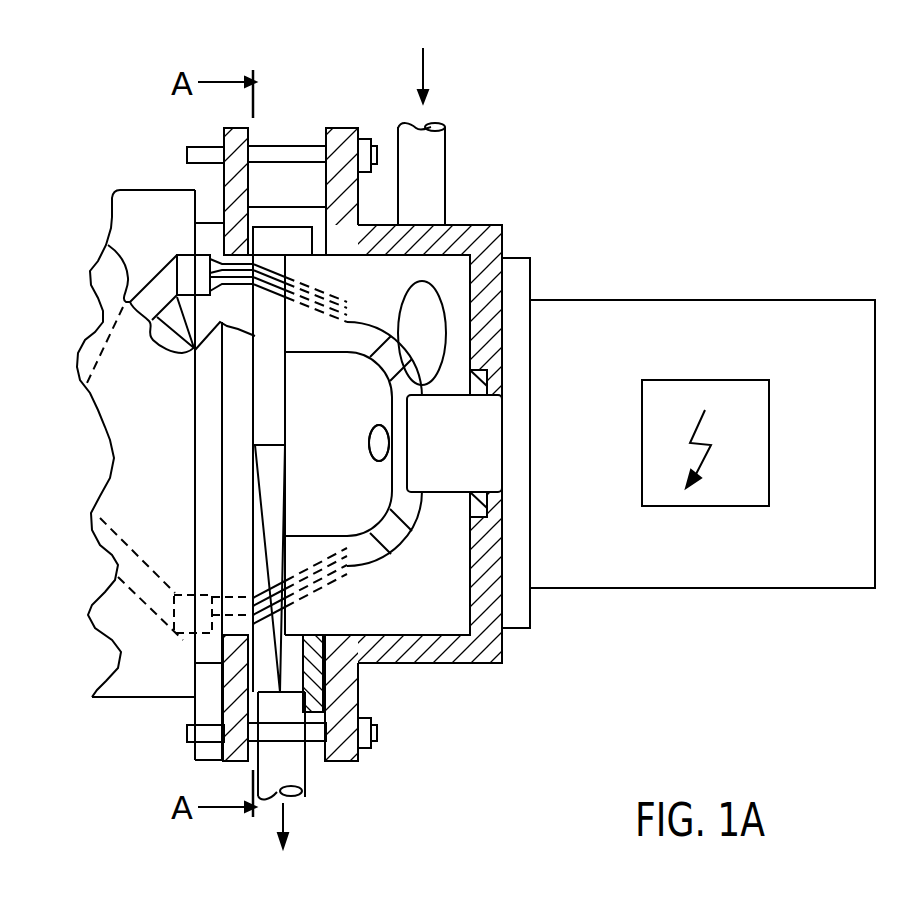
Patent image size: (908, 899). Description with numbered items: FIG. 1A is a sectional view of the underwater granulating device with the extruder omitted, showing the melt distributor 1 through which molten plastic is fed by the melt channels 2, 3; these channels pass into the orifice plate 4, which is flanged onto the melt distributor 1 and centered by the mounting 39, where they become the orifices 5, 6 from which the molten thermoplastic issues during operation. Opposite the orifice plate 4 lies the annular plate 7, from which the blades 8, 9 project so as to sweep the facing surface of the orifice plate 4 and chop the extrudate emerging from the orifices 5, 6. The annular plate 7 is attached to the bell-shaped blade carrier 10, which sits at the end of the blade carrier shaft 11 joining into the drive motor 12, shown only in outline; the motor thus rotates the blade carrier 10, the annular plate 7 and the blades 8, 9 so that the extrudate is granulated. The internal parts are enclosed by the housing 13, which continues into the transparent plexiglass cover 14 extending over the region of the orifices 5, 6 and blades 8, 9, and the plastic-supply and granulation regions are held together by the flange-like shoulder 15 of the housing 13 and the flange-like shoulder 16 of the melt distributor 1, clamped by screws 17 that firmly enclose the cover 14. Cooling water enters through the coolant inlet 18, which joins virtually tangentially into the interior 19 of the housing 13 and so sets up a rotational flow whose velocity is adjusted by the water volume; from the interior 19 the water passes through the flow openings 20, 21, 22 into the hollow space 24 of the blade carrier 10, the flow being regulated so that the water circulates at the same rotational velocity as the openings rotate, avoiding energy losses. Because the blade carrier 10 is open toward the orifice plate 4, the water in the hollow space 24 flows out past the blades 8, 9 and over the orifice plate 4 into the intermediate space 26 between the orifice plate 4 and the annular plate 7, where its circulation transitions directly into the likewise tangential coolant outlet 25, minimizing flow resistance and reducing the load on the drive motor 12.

The melt distributor 1 is at (105, 682).
The melt channel 2 is at (110, 341).
The melt channel 3 is at (148, 583).
The orifice plate 4 is at (203, 497).
The orifice 5 is at (232, 600).
The orifice 6 is at (232, 616).
The annular plate 7 is at (303, 558).
The blade 8 is at (267, 590).
The blade 9 is at (270, 233).
The blade carrier 10 is at (372, 332).
The blade carrier shaft 11 is at (491, 419).
The drive motor 12 is at (760, 313).
The housing 13 is at (457, 653).
The cover 14 is at (297, 213).
The flange-like shoulder 15 is at (336, 132).
The flange-like shoulder 16 is at (203, 136).
The screw 17 is at (272, 155).
The coolant inlet 18 is at (440, 150).
The interior 19 is at (460, 567).
The flow opening 20 is at (400, 363).
The flow opening 21 is at (402, 543).
The flow opening 22 is at (381, 443).
The hollow space 24 is at (379, 443).
The coolant outlet 25 is at (298, 772).
The intermediate space 26 is at (268, 418).
The mounting 39 is at (230, 128).